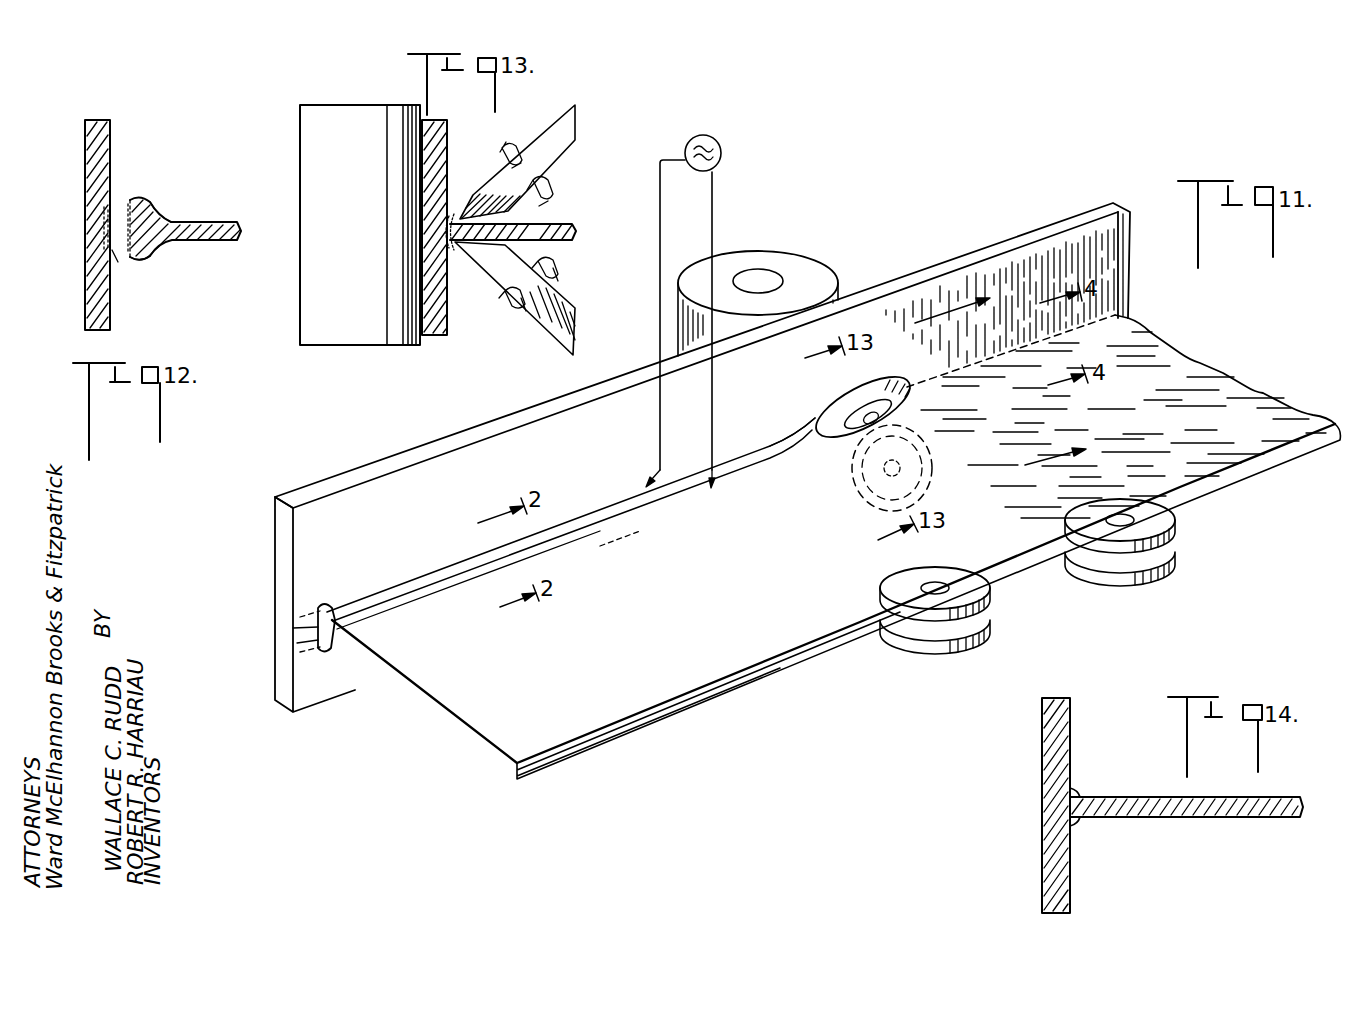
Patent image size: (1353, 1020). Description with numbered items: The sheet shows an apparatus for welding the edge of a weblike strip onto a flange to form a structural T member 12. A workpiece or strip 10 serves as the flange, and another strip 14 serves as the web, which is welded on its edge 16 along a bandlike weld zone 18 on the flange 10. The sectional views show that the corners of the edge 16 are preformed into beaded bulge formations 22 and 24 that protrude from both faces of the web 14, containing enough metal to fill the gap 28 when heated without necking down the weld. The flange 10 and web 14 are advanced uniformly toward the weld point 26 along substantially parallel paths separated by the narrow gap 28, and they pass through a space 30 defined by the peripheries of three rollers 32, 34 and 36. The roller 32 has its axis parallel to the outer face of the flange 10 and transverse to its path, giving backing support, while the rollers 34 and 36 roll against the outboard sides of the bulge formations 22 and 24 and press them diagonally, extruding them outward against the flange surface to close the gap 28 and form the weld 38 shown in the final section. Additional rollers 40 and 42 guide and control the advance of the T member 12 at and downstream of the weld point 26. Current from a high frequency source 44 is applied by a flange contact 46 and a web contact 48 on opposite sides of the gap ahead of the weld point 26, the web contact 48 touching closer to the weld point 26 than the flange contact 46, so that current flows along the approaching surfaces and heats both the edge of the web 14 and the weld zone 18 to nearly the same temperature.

In FIG. 12, the flange strip 10 is at (85, 231).
In FIG. 13, the flange strip 10 is at (432, 337).
In FIG. 11, the flange strip 10 is at (306, 490).
In FIG. 14, the flange strip 10 is at (1042, 756).
In FIG. 11, the structural T member 12 is at (1141, 306).
In FIG. 14, the structural T member 12 is at (1103, 745).
In FIG. 12, the web strip 14 is at (215, 220).
In FIG. 13, the web strip 14 is at (558, 224).
In FIG. 11, the web strip 14 is at (486, 735).
In FIG. 14, the web strip 14 is at (1225, 815).
In FIG. 12, the web edge 16 is at (123, 204).
In FIG. 11, the web edge 16 is at (298, 643).
In FIG. 11, the weld zone 18 is at (300, 631).
In FIG. 12, the bulge formation 22 is at (147, 201).
In FIG. 11, the bulge formation 22 is at (385, 600).
In FIG. 12, the bulge formation 24 is at (145, 256).
In FIG. 11, the bulge formation 24 is at (333, 654).
In FIG. 11, the weld point 26 is at (810, 420).
In FIG. 12, the gap 28 is at (117, 250).
In FIG. 13, the space 30 is at (460, 152).
In FIG. 11, the space 30 is at (855, 282).
In FIG. 13, the backing roller 32 is at (355, 340).
In FIG. 11, the backing roller 32 is at (806, 262).
In FIG. 13, the pressure roller 34 is at (578, 136).
In FIG. 11, the pressure roller 34 is at (905, 390).
In FIG. 13, the pressure roller 36 is at (565, 308).
In FIG. 11, the pressure roller 36 is at (935, 465).
In FIG. 11, the weld 38 is at (1005, 366).
In FIG. 14, the weld 38 is at (1080, 793).
In FIG. 11, the guide rollers 40 is at (980, 611).
In FIG. 11, the guide rollers 42 is at (1170, 557).
In FIG. 11, the high frequency source 44 is at (722, 152).
In FIG. 11, the flange contact 46 is at (655, 469).
In FIG. 11, the web contact 48 is at (722, 470).